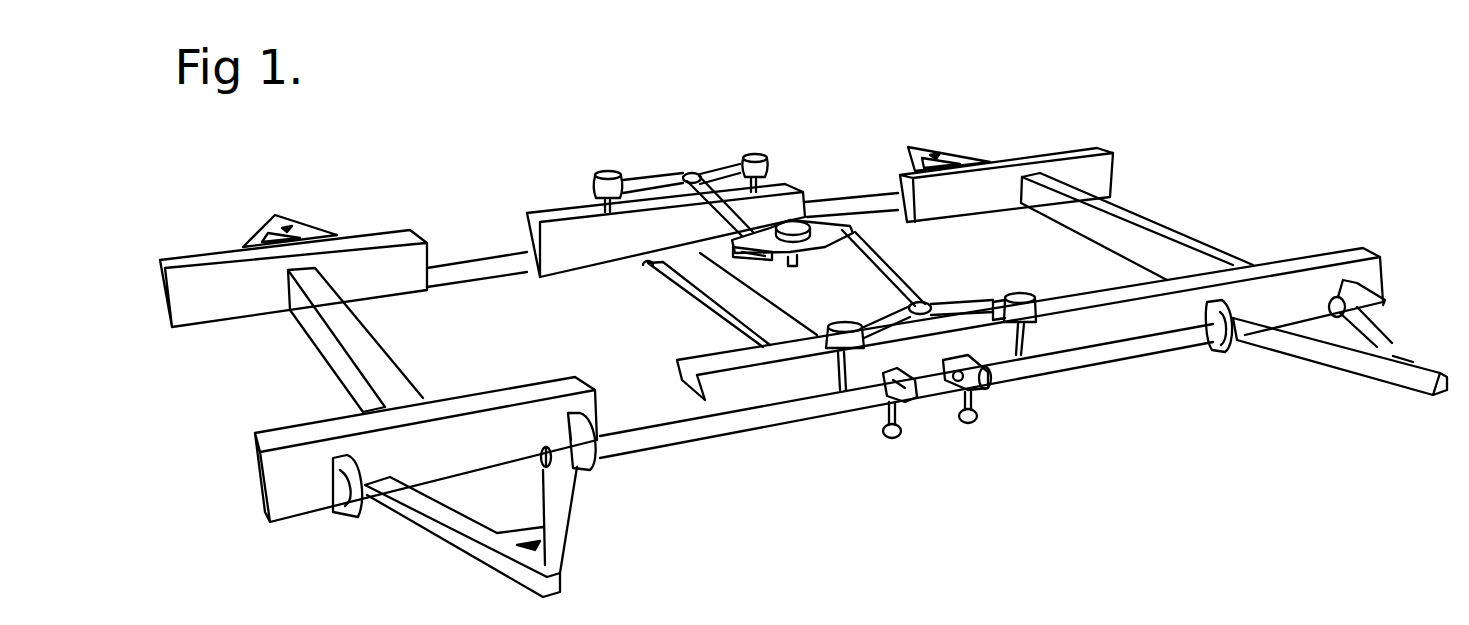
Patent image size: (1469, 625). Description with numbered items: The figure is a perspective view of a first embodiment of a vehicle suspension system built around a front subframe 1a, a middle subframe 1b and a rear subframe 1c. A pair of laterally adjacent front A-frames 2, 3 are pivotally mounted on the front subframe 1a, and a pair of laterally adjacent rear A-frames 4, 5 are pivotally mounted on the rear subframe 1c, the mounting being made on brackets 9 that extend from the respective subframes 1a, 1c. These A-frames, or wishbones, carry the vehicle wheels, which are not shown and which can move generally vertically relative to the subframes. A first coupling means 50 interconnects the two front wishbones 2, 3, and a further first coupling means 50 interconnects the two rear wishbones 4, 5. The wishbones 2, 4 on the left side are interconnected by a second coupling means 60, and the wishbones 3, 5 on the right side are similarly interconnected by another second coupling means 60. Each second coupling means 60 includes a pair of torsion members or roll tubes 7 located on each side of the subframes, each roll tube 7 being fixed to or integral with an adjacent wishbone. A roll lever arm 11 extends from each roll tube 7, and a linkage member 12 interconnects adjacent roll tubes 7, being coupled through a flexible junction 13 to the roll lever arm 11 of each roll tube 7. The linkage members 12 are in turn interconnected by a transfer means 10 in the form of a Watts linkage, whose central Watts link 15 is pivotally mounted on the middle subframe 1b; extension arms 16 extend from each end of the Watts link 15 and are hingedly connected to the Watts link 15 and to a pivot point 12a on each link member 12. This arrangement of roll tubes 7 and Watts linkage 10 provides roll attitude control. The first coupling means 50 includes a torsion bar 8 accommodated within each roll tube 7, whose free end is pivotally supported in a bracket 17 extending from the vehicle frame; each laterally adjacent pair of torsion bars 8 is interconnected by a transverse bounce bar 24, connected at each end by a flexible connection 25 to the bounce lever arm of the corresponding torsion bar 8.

The front subframe 1a is at (382, 240).
The middle subframe 1b is at (737, 165).
The rear subframe 1c is at (1045, 160).
The front A-frame 2 is at (550, 557).
The front A-frame 3 is at (265, 232).
The rear A-frame 4 is at (1420, 365).
The rear A-frame 5 is at (920, 155).
The torsion member 7 is at (473, 265).
The torsion bar 8 is at (902, 398).
The bracket 9 is at (351, 512).
The transfer means 10 is at (805, 173).
The roll lever arm 11 is at (590, 203).
The linkage member 12 is at (658, 180).
The pivot point 12a is at (690, 170).
The flexible junction 13 is at (608, 170).
The Watts link 15 is at (846, 228).
The extension arm 16 is at (686, 175).
The bracket 17 is at (908, 388).
The bounce bar 24 is at (730, 318).
The flexible connection 25 is at (890, 437).
The first coupling means 50 is at (680, 292).
The second coupling means 60 is at (723, 455).